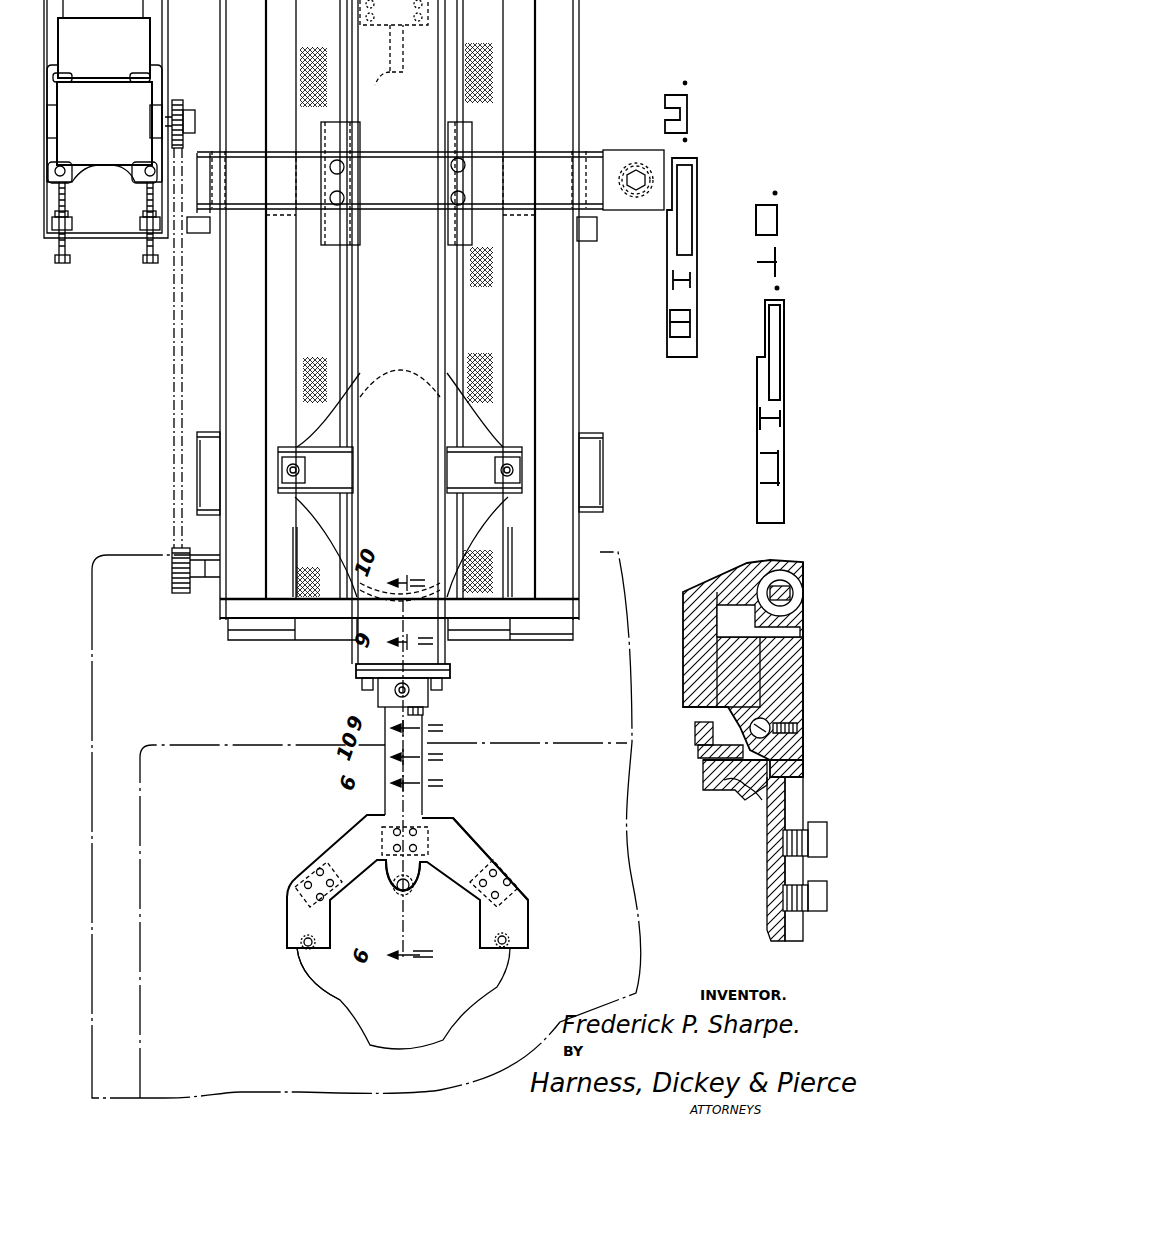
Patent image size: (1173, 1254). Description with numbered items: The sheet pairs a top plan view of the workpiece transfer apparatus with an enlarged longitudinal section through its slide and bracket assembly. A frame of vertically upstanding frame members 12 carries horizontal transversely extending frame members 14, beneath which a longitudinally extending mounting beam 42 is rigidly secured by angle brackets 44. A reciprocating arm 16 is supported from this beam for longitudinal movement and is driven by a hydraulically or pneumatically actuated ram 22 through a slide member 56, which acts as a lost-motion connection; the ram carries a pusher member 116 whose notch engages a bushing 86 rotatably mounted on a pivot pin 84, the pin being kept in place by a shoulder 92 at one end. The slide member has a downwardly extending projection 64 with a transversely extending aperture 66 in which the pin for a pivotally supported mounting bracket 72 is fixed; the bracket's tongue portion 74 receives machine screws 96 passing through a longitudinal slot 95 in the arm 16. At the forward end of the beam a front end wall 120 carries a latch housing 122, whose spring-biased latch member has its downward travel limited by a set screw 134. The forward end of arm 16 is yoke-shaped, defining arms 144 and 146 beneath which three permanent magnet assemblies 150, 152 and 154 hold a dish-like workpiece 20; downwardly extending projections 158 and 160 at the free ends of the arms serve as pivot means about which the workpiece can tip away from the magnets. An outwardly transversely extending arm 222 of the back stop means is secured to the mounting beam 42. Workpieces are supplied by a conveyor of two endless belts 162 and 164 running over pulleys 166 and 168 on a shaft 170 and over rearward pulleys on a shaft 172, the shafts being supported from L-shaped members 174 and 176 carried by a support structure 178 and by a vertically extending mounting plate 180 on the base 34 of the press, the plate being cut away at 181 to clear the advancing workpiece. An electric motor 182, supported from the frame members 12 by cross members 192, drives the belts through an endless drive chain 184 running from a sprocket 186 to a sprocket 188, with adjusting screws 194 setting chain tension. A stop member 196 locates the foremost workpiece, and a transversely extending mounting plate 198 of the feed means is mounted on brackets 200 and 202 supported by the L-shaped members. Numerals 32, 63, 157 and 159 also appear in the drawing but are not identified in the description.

In FIG. 2, the vertically upstanding frame members 12 is at (222, 150).
In FIG. 2, the horizontal transversely extending frame members 14 is at (545, 110).
In FIG. 2, the reciprocating arm 16 is at (430, 760).
In FIG. 10, the reciprocating arm 16 is at (795, 945).
In FIG. 2, the workpiece 20 is at (300, 440).
In FIG. 2, the ram 22 is at (390, 85).
In FIG. 2, the machine outline 32 is at (180, 745).
In FIG. 2, the base 34 is at (99, 555).
In FIG. 2, the mounting beam 42 is at (415, 240).
In FIG. 2, the angle brackets 44 is at (322, 150).
In FIG. 10, the slide member 56 is at (695, 605).
In FIG. 10, the screw 63 is at (764, 718).
In FIG. 10, the downwardly extending projection 64 is at (760, 700).
In FIG. 10, the transversely extending aperture 66 is at (728, 660).
In FIG. 10, the mounting bracket 72 is at (805, 625).
In FIG. 10, the tongue portion 74 is at (775, 875).
In FIG. 10, the pivot pin 84 is at (785, 586).
In FIG. 10, the bushing 86 is at (760, 585).
In FIG. 10, the shoulder 92 is at (740, 790).
In FIG. 10, the longitudinal slot 95 is at (765, 800).
In FIG. 10, the machine screws 96 is at (815, 912).
In FIG. 10, the pusher member 116 is at (735, 615).
In FIG. 2, the front end wall 120 is at (303, 622).
In FIG. 2, the latch housing 122 is at (378, 690).
In FIG. 2, the set screw 134 is at (430, 690).
In FIG. 2, the arm 144 is at (335, 850).
In FIG. 2, the arm 146 is at (472, 852).
In FIG. 2, the permanent magnet assembly 150 is at (290, 890).
In FIG. 2, the permanent magnet assembly 152 is at (352, 825).
In FIG. 2, the permanent magnet assembly 154 is at (520, 875).
In FIG. 2, the pivot 157 is at (413, 890).
In FIG. 2, the downwardly extending projection 158 is at (307, 970).
In FIG. 2, the notch 159 is at (388, 870).
In FIG. 2, the downwardly extending projection 160 is at (507, 937).
In FIG. 2, the endless belt 162 is at (296, 300).
In FIG. 2, the endless belt 164 is at (465, 295).
In FIG. 2, the pulley 166 is at (290, 505).
In FIG. 2, the pulley 168 is at (515, 510).
In FIG. 2, the shaft 170 is at (205, 580).
In FIG. 2, the shaft 172 is at (223, 335).
In FIG. 2, the L-shaped member 174 is at (428, 405).
In FIG. 2, the L-shaped member 176 is at (581, 325).
In FIG. 10, the L-shaped member 176 is at (720, 790).
In FIG. 2, the support structure 178 is at (520, 620).
In FIG. 2, the mounting plate 180 is at (553, 632).
In FIG. 2, the cut away 181 is at (303, 652).
In FIG. 2, the electric motor 182 is at (100, 145).
In FIG. 2, the endless drive chain 184 is at (175, 395).
In FIG. 2, the sprocket 186 is at (175, 98).
In FIG. 2, the sprocket 188 is at (172, 565).
In FIG. 2, the cross members 192 is at (185, 280).
In FIG. 2, the adjusting screws 194 is at (62, 265).
In FIG. 2, the stop member 196 is at (452, 597).
In FIG. 2, the mounting plate 198 is at (515, 380).
In FIG. 2, the bracket 200 is at (200, 485).
In FIG. 2, the bracket 202 is at (604, 455).
In FIG. 2, the arm 222 is at (332, 485).